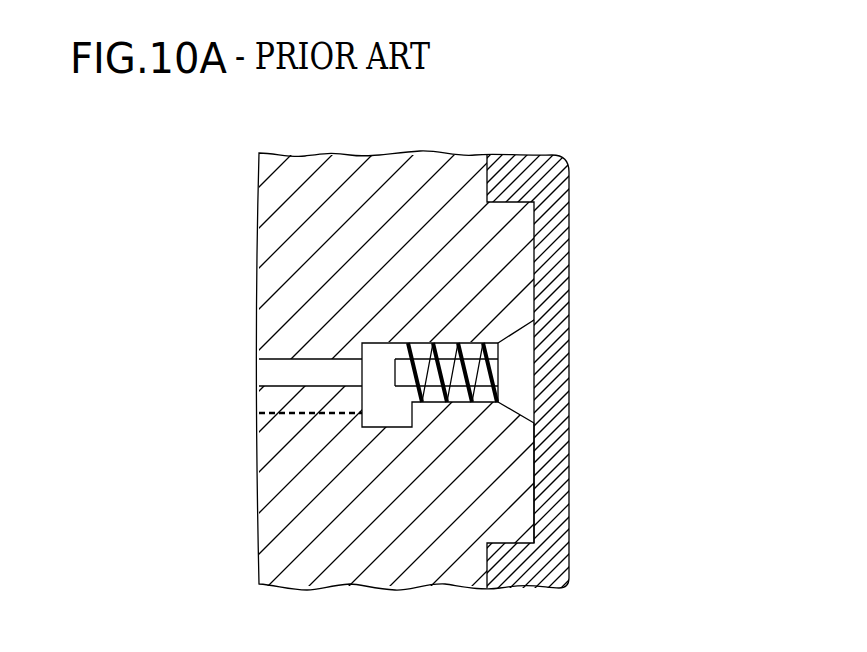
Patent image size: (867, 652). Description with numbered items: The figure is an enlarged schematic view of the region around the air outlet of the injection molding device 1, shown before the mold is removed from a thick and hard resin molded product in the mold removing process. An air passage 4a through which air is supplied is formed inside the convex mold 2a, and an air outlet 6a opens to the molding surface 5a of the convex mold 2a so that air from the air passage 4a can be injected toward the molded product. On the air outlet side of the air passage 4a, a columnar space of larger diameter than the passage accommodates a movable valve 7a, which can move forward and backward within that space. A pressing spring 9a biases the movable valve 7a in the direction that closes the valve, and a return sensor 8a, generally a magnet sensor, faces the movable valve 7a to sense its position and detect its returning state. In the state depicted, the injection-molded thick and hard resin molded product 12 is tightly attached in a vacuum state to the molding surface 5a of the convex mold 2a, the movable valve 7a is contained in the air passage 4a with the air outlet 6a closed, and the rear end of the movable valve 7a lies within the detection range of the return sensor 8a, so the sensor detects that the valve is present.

The injection molding device 1 is at (647, 145).
The convex mold 2a is at (410, 158).
The thick and hard resin molded product 12 is at (545, 157).
The air passage 4a is at (292, 370).
The molding surface 5a is at (535, 463).
The air outlet 6a is at (507, 335).
The movable valve 7a is at (519, 402).
The return sensor 8a is at (385, 417).
The pressing spring 9a is at (496, 366).